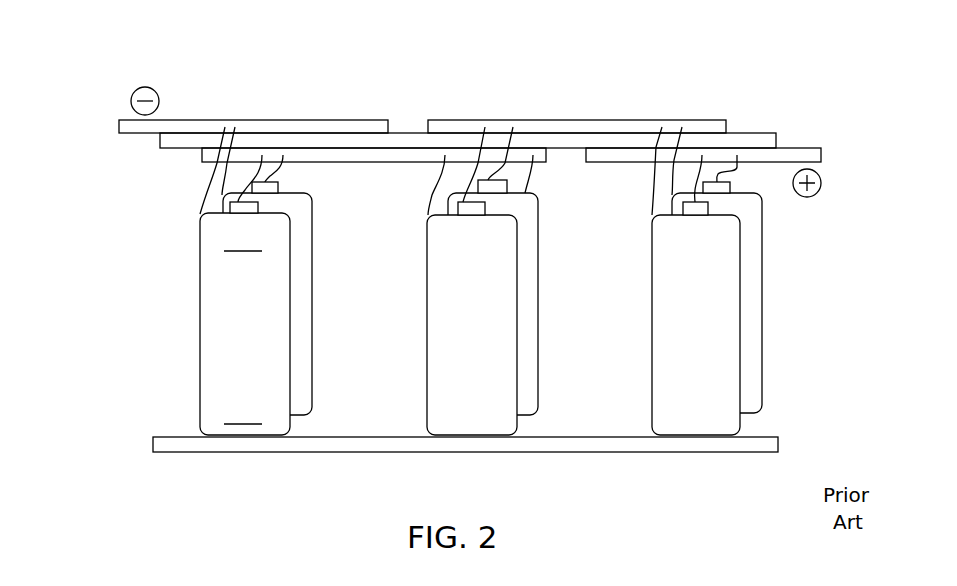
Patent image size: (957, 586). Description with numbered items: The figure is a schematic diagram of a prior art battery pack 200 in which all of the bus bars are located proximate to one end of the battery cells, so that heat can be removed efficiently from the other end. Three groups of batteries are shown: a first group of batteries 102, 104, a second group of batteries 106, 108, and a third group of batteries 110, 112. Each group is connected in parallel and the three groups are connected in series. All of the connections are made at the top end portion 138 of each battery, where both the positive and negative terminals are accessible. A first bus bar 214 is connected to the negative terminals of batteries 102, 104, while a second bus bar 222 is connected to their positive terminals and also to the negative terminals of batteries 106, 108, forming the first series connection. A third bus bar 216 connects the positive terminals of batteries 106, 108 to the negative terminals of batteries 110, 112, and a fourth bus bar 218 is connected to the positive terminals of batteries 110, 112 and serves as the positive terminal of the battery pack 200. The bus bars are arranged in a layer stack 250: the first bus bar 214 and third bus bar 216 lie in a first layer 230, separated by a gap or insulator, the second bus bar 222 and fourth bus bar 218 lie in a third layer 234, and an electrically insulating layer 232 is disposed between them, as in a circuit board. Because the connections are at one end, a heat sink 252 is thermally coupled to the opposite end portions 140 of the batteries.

The battery pack 200 is at (108, 103).
The battery 102 is at (278, 318).
The battery 104 is at (312, 235).
The battery 106 is at (517, 298).
The battery 108 is at (538, 223).
The battery 110 is at (742, 312).
The battery 112 is at (762, 243).
The top end portion 138 is at (243, 240).
The opposite end portion 140 is at (243, 413).
The first bus bar 214 is at (283, 120).
The third bus bar 216 is at (562, 120).
The fourth bus bar 218 is at (778, 163).
The second bus bar 222 is at (388, 165).
The first layer 230 is at (385, 143).
The electrically insulating layer 232 is at (160, 141).
The third layer 234 is at (494, 187).
The layer stack 250 is at (471, 157).
The heat sink 252 is at (353, 452).